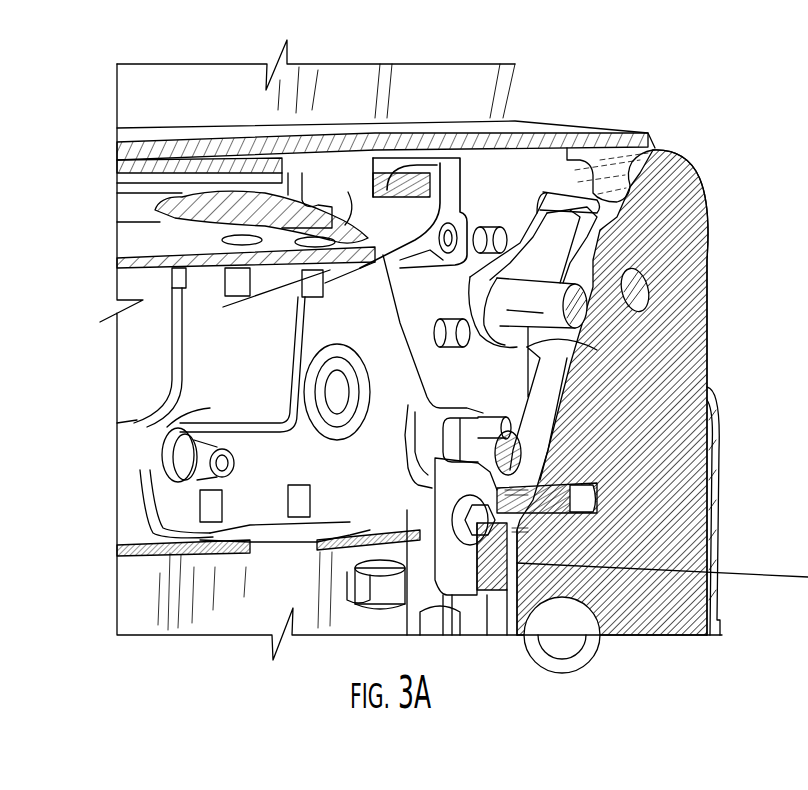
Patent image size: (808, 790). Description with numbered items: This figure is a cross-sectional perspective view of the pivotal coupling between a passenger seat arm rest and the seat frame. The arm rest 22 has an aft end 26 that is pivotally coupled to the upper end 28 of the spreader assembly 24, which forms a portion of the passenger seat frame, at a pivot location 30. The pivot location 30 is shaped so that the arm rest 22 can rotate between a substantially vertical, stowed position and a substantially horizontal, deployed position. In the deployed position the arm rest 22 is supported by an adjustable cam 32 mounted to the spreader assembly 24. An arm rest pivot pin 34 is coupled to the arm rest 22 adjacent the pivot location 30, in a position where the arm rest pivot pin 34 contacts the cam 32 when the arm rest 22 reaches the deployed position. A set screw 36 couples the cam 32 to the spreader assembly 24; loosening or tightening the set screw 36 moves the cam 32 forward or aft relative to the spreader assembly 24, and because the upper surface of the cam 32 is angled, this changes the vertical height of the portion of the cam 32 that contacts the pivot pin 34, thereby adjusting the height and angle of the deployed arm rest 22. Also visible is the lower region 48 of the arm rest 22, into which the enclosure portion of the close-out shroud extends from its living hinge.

The arm rest 22 is at (548, 120).
The spreader assembly 24 is at (690, 293).
The aft end 26 is at (593, 210).
The upper end 28 is at (680, 240).
The pivot location 30 is at (640, 294).
The adjustable cam 32 is at (487, 620).
The arm rest pivot pin 34 is at (570, 338).
The set screw 36 is at (540, 507).
The lower region 48 is at (194, 413).